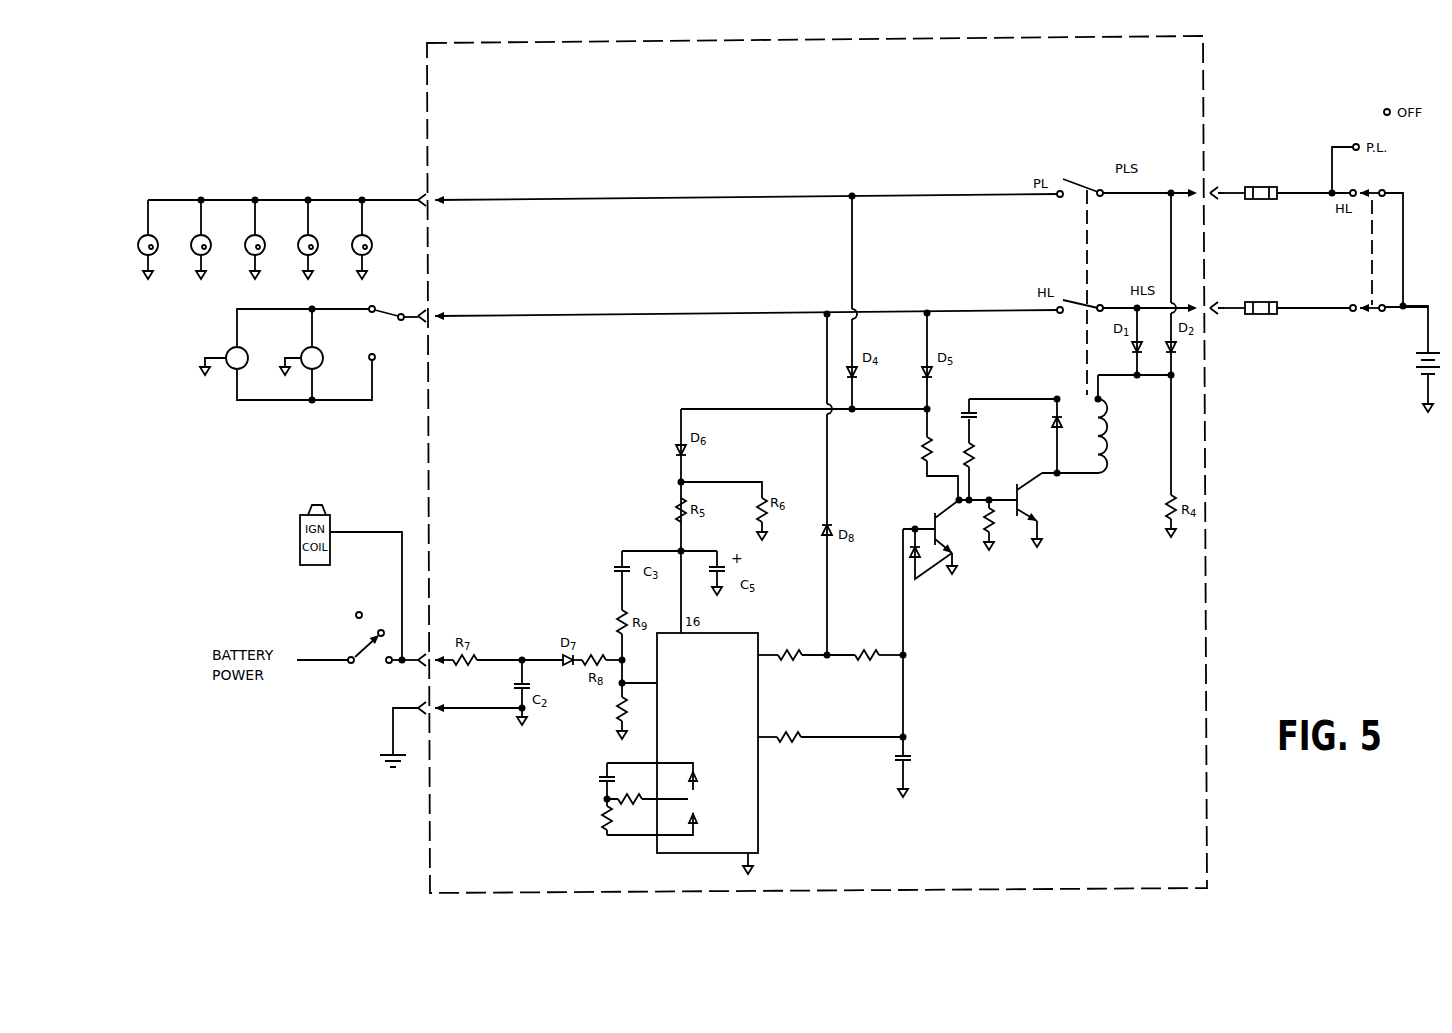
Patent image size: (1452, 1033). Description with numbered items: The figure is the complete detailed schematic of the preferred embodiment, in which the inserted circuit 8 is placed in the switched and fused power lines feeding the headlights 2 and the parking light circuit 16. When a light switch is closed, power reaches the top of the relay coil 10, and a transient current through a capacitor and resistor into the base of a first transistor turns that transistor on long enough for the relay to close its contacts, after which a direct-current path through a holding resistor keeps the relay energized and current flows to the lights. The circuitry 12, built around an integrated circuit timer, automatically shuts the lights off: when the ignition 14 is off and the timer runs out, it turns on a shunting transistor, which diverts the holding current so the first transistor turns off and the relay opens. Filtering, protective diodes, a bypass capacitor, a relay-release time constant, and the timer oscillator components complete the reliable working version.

The headlights 2 is at (217, 344).
The inserted circuit 8 is at (1004, 582).
The relay coil 10 is at (1145, 440).
The circuitry 12 is at (830, 764).
The ignition 14 is at (357, 638).
The parking light circuit 16 is at (318, 192).